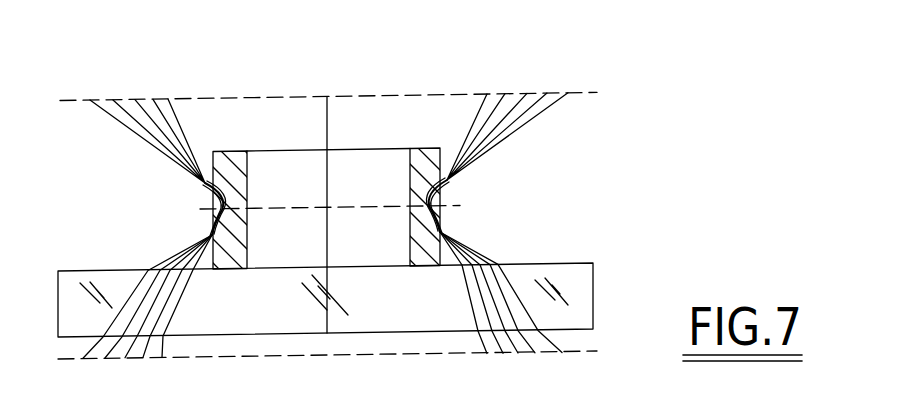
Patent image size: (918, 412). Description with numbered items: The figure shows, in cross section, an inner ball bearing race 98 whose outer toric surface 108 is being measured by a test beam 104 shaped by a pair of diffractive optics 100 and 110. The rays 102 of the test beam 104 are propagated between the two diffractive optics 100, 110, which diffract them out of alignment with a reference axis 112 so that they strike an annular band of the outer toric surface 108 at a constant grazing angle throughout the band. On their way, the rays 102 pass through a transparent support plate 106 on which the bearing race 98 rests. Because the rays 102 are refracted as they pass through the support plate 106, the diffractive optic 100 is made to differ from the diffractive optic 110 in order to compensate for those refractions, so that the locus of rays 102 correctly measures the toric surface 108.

The inner ball bearing race 98 is at (236, 152).
The diffractive optic 100 is at (569, 352).
The rays 102 is at (186, 246).
The test beam 104 is at (162, 160).
The support plate 106 is at (570, 273).
The outer toric surface 108 is at (433, 210).
The diffractive optic 110 is at (568, 94).
The reference axis 112 is at (328, 104).